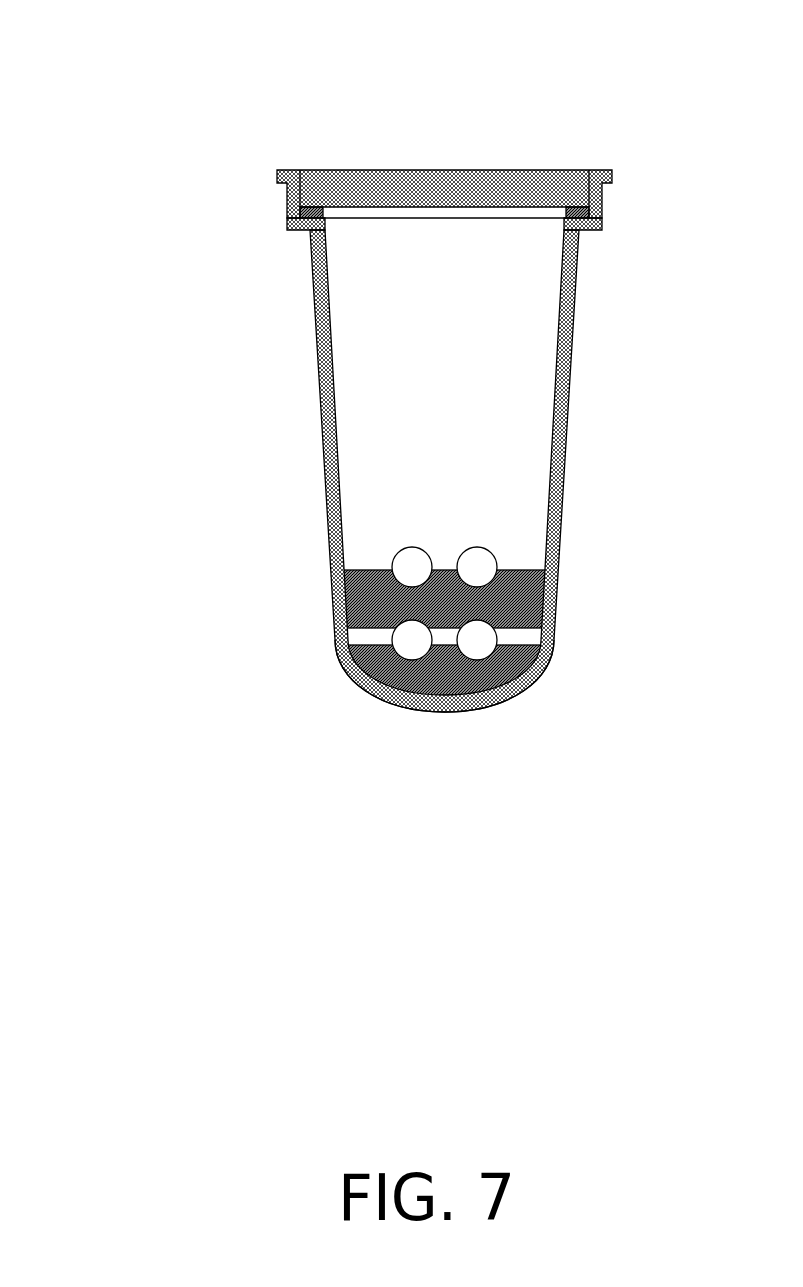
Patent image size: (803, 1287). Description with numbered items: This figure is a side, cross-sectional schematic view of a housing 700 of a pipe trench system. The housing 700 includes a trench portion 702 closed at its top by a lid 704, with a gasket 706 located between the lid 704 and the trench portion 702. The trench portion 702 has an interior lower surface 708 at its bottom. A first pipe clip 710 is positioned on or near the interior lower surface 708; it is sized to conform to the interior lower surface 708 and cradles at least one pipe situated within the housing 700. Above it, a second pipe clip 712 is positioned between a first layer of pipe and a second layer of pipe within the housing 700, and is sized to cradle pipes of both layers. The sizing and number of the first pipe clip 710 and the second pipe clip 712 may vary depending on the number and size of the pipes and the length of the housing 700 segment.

The housing 700 is at (197, 90).
The trench portion 702 is at (318, 373).
The lid 704 is at (443, 172).
The gasket 706 is at (580, 223).
The interior lower surface 708 is at (446, 694).
The first pipe clip 710 is at (345, 648).
The second pipe clip 712 is at (345, 572).